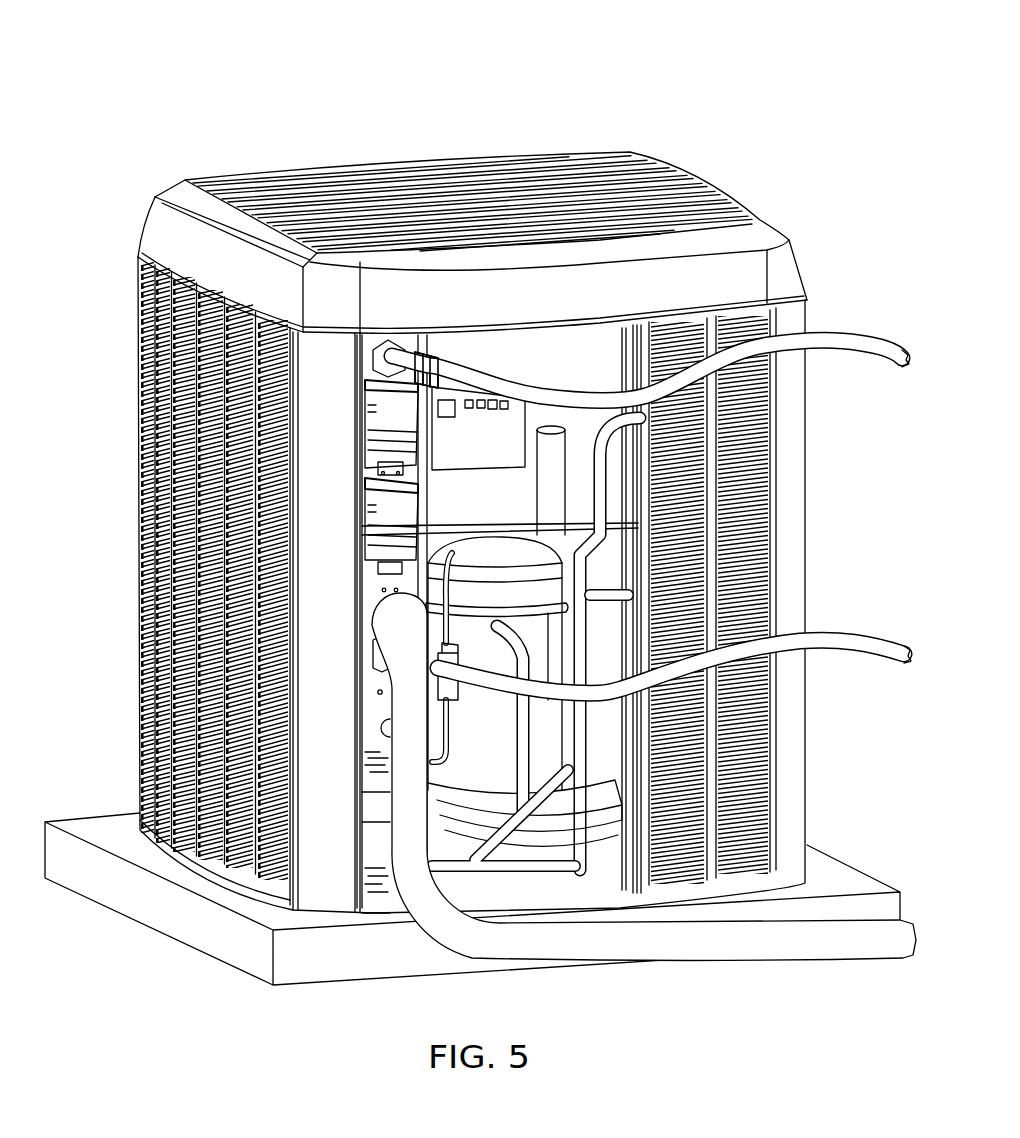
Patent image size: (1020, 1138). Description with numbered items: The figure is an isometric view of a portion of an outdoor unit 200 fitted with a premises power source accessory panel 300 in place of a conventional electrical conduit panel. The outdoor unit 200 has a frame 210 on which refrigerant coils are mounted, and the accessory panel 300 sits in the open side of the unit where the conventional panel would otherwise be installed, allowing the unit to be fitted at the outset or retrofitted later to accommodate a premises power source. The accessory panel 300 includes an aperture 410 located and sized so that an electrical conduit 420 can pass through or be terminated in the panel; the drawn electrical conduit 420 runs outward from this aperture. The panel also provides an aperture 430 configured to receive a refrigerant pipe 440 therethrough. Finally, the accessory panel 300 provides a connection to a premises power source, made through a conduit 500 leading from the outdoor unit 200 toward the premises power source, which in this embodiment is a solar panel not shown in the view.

The outdoor unit 200 is at (352, 69).
The frame 210 is at (800, 272).
The premises power source accessory panel 300 is at (420, 513).
The aperture 410 is at (403, 337).
The electrical conduit 420 is at (568, 382).
The aperture 430 is at (363, 608).
The refrigerant pipe 440 is at (397, 682).
The conduit 500 is at (838, 633).